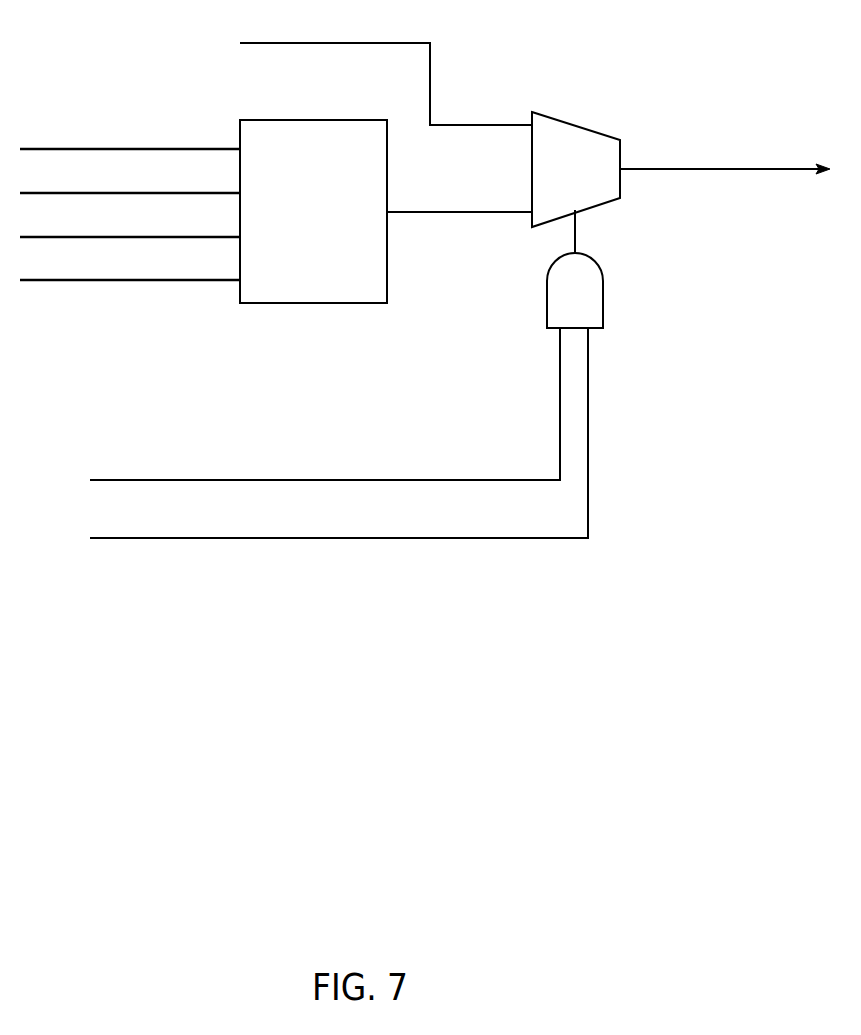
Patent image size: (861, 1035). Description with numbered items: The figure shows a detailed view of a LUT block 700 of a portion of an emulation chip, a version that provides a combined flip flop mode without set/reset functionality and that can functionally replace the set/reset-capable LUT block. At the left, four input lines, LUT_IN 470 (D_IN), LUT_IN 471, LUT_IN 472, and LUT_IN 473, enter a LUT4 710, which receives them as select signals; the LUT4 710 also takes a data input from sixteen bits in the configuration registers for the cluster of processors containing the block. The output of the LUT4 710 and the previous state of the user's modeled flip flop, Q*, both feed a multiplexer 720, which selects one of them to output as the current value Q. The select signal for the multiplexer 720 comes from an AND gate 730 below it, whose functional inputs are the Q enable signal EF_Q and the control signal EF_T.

The LUT block 700 is at (803, 36).
The LUT4 710 is at (330, 231).
The multiplexer 720 is at (590, 178).
The AND gate 730 is at (590, 301).
The LUT_IN (D_IN) 470 is at (130, 135).
The LUT_IN 471 is at (130, 179).
The LUT_IN 472 is at (130, 223).
The LUT_IN 473 is at (130, 267).